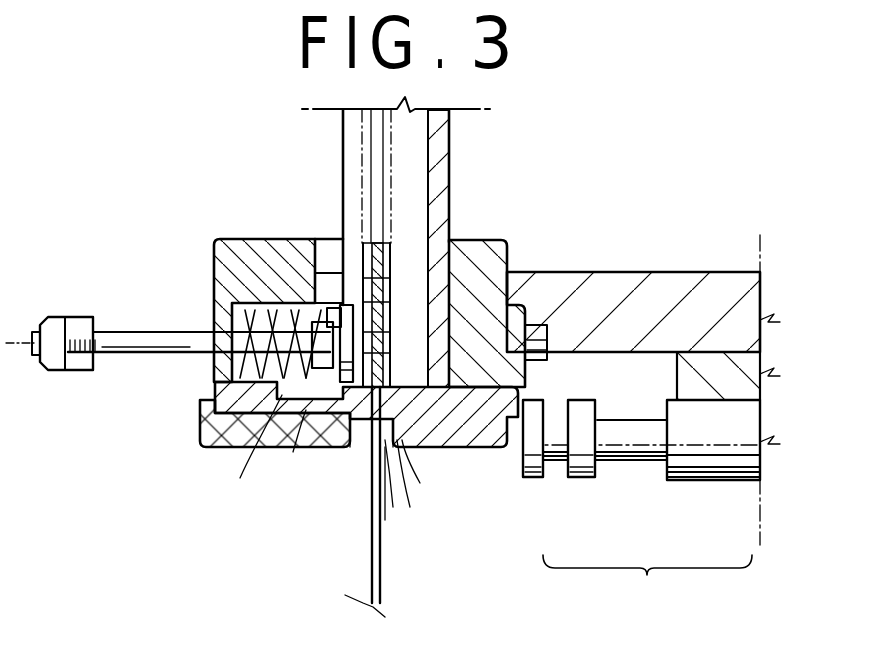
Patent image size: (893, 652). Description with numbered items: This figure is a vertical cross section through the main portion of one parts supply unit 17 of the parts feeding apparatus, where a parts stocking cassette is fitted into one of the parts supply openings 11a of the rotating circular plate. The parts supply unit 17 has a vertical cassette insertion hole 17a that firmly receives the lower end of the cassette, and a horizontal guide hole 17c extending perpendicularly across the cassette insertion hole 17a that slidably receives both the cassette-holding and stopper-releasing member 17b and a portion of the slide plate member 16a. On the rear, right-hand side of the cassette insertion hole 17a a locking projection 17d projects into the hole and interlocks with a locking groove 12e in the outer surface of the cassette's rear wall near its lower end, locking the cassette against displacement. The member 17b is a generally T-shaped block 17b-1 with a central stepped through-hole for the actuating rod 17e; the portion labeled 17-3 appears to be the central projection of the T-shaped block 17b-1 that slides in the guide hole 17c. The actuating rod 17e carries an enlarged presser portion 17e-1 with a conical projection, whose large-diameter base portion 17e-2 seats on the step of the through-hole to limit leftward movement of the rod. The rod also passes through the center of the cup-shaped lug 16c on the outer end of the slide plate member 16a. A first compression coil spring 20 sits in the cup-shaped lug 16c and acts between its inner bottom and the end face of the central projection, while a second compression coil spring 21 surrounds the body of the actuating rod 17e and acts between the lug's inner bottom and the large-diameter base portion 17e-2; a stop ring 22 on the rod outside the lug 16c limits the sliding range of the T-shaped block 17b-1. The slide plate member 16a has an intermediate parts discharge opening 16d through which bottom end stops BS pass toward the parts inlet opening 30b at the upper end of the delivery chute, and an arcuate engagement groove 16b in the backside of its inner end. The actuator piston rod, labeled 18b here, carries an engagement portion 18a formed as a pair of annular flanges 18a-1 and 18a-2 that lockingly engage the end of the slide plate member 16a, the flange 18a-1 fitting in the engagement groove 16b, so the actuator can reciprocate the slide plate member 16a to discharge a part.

The parts supply opening 11a is at (364, 448).
The locking groove 12e is at (433, 308).
The parts supply unit 17 is at (235, 250).
The cassette insertion hole 17a is at (340, 233).
The cassette-holding and stopper-releasing member 17b is at (321, 296).
The T-shaped block 17b-1 is at (240, 478).
The guide hole 17c is at (222, 322).
The locking projection 17d is at (508, 256).
The actuating rod 17e is at (137, 361).
The presser portion 17e-1 is at (420, 483).
The large-diameter base portion 17e-2 is at (393, 507).
The holder portion 17-3 is at (293, 452).
The slide plate member 16a is at (228, 385).
The engagement groove 16b is at (498, 452).
The cup-shaped lug 16c is at (222, 330).
The parts discharge opening 16d is at (362, 448).
The first compression coil spring 20 is at (256, 420).
The second compression coil spring 21 is at (238, 352).
The stop ring 22 is at (196, 352).
The parts inlet opening 30b is at (410, 507).
The bottom end stop BS is at (392, 343).
The engagement portion 18a is at (647, 585).
The annular flange 18a-1 is at (533, 480).
The annular flange 18a-2 is at (587, 478).
The rod 18b is at (628, 438).